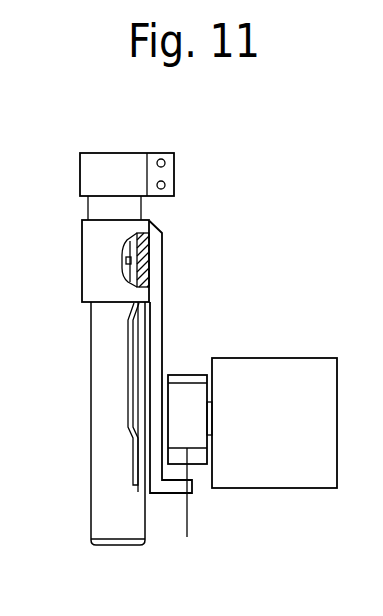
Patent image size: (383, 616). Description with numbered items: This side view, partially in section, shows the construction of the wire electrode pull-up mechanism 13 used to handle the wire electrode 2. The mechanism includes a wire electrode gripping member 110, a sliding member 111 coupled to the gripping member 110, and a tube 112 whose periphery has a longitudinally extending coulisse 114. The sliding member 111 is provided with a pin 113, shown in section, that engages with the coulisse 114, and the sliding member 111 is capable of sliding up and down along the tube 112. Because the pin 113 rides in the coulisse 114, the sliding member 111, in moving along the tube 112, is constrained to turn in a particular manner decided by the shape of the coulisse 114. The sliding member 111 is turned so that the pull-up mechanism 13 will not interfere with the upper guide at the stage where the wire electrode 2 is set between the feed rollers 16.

The sliding member 111 is at (91, 257).
The tube 112 is at (100, 438).
The pin 113 is at (162, 256).
The coulisse 114 is at (132, 358).
The wire electrode pull-up mechanism 13 is at (178, 327).
The feed rollers 16 is at (199, 440).
The wire electrode 2 is at (188, 515).
The wire electrode gripping member 110 is at (163, 488).